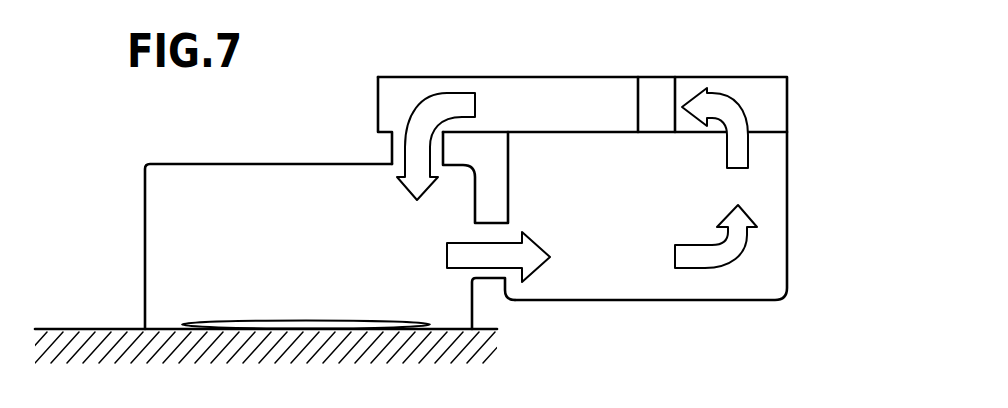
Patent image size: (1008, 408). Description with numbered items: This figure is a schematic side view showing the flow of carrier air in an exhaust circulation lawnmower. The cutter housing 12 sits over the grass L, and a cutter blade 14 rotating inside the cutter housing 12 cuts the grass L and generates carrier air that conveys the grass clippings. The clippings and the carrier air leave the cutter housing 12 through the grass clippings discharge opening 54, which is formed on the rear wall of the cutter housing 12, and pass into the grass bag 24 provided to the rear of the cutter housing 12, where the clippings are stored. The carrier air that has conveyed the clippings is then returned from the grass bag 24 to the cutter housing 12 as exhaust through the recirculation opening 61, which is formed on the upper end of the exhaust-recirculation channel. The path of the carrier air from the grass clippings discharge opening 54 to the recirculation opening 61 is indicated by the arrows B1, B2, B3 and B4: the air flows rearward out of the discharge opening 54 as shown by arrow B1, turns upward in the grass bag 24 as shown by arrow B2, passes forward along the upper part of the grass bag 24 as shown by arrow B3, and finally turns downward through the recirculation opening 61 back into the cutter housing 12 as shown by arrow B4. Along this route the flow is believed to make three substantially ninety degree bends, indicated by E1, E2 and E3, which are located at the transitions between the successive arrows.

The cutter housing 12 is at (143, 199).
The cutter blade 14 is at (273, 326).
The grass bag 24 is at (788, 190).
The grass clippings discharge opening 54 is at (487, 273).
The recirculation opening 61 is at (395, 148).
The grass L is at (86, 335).
The arrow B1 is at (487, 265).
The arrow B2 is at (716, 253).
The arrow B3 is at (715, 128).
The arrow B4 is at (454, 146).
The bend E1 is at (737, 245).
The bend E2 is at (732, 110).
The bend E3 is at (427, 108).